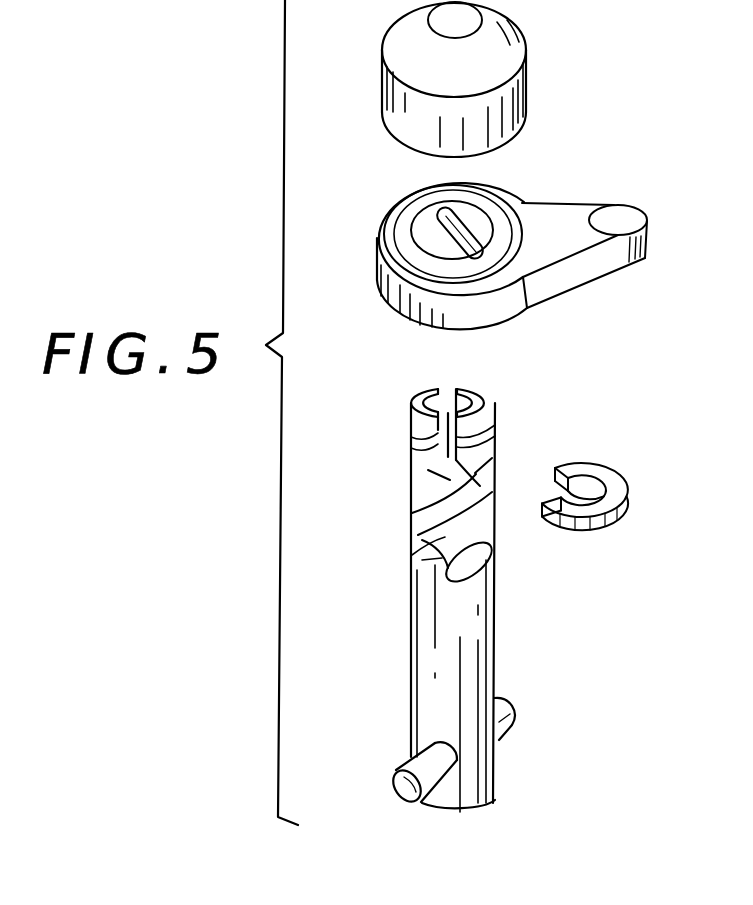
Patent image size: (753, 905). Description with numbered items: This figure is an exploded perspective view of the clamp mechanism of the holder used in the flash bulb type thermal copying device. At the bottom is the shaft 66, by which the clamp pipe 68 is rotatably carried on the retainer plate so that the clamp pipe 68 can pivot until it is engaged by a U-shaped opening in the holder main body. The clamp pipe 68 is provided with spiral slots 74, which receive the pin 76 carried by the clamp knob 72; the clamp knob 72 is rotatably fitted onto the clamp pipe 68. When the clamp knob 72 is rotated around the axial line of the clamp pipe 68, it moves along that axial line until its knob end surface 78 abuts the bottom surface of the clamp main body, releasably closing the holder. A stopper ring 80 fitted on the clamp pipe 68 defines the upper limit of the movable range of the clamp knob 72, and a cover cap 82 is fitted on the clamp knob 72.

The shaft 66 is at (505, 720).
The clamp pipe 68 is at (473, 643).
The clamp knob 72 is at (557, 210).
The spiral slots 74 is at (490, 555).
The pin 76 is at (438, 214).
The knob end surface 78 is at (482, 330).
The stopper ring 80 is at (593, 523).
The cover cap 82 is at (517, 95).